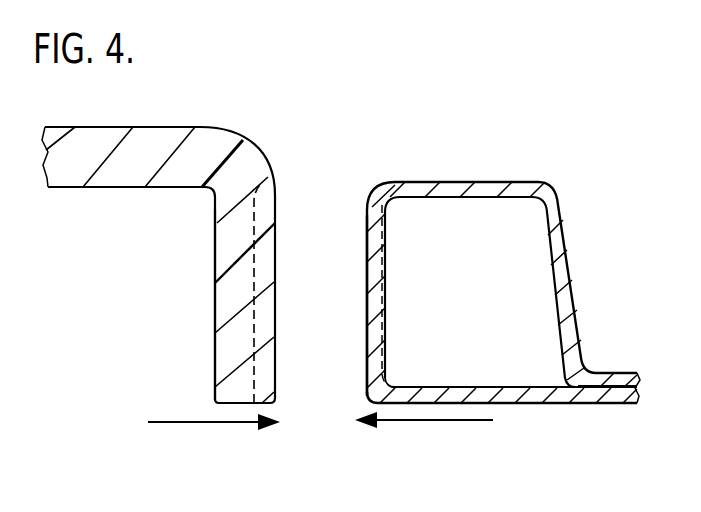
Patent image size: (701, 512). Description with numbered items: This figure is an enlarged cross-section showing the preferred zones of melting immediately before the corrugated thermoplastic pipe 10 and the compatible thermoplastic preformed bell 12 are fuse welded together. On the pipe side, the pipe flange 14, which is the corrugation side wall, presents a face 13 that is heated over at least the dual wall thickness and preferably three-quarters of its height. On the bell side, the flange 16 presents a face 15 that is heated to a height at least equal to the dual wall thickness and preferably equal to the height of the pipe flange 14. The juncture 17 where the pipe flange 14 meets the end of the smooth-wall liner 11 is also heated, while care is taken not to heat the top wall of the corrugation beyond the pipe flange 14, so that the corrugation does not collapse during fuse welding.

The corrugated thermoplastic pipe 10 is at (465, 302).
The liner 11 is at (592, 405).
The preformed bell 12 is at (188, 244).
The face 13 is at (366, 346).
The pipe flange 14 is at (389, 312).
The face 15 is at (277, 318).
The flange 16 is at (212, 318).
The juncture 17 is at (365, 403).